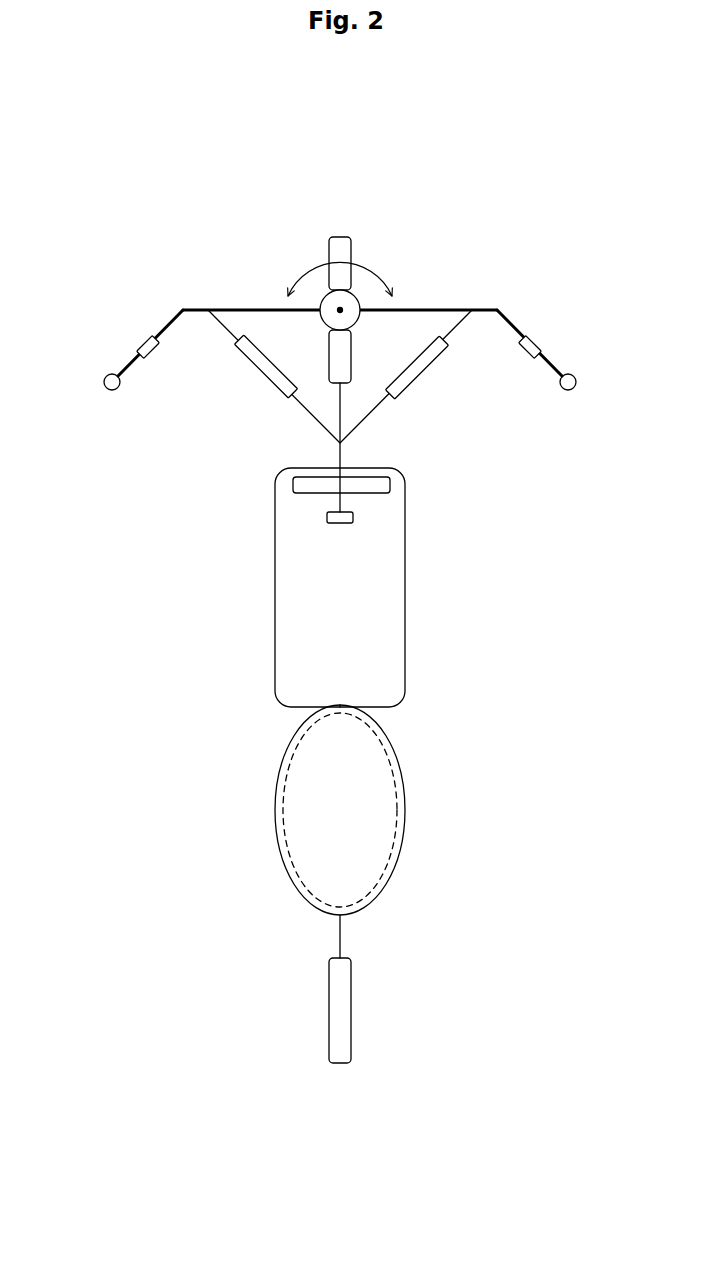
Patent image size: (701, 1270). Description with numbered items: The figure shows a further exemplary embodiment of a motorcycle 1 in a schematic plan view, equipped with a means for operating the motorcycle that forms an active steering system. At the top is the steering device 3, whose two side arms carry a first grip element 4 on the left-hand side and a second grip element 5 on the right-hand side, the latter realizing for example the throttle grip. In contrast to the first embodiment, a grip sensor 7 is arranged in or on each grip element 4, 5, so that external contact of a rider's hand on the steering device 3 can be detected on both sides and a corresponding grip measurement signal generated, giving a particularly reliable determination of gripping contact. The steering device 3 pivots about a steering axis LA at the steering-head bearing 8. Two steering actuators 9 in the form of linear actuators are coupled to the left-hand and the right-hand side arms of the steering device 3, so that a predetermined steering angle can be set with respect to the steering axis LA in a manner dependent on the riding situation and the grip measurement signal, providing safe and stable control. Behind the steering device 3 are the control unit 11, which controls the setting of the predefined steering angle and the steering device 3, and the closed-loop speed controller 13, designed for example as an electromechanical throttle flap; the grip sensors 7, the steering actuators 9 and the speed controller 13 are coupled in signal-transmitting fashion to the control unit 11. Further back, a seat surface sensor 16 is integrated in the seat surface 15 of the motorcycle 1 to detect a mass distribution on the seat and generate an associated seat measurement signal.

The motorcycle 1 is at (98, 185).
The steering device 3 is at (497, 240).
The first grip element 4 is at (167, 328).
The second grip element 5 is at (515, 322).
The grip sensor 7 is at (137, 350).
The steering-head bearing 8 is at (362, 314).
The steering actuator 9 is at (260, 373).
The steering axis LA is at (340, 310).
The control unit 11 is at (378, 485).
The closed-loop speed controller 13 is at (327, 518).
The seat surface 15 is at (423, 762).
The seat surface sensor 16 is at (283, 817).